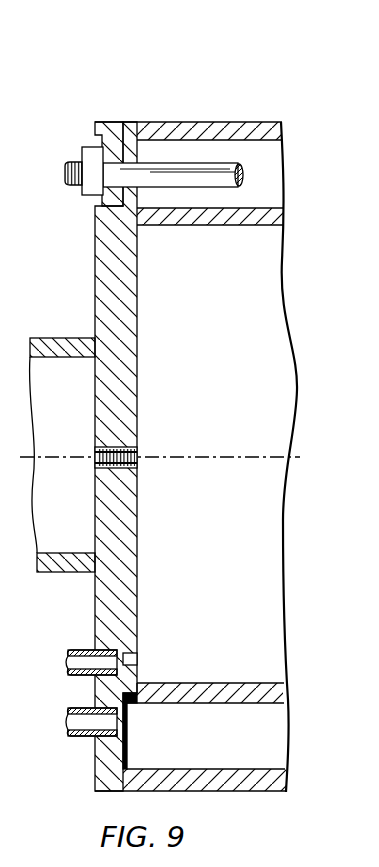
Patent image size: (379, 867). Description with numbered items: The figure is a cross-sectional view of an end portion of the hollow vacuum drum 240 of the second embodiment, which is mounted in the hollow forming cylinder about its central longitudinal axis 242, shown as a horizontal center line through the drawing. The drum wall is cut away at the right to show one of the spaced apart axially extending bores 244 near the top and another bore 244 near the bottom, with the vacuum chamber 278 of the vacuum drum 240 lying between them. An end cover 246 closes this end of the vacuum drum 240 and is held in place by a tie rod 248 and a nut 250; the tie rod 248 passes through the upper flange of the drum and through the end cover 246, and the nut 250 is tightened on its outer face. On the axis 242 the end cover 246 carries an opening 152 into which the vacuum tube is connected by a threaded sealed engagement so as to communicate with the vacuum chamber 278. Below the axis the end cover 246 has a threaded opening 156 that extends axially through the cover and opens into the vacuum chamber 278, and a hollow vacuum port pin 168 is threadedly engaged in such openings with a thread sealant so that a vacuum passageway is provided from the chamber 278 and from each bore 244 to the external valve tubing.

The hollow vacuum drum 240 is at (222, 107).
The central longitudinal axis 242 is at (253, 457).
The axially extending bore 244 is at (276, 204).
The end cover 246 is at (93, 616).
The tie rod 248 is at (236, 160).
The nut 250 is at (95, 190).
The vacuum chamber 278 is at (226, 337).
The opening 152 is at (138, 459).
The threaded opening 156 is at (138, 658).
The hollow vacuum port pin 168 is at (78, 707).